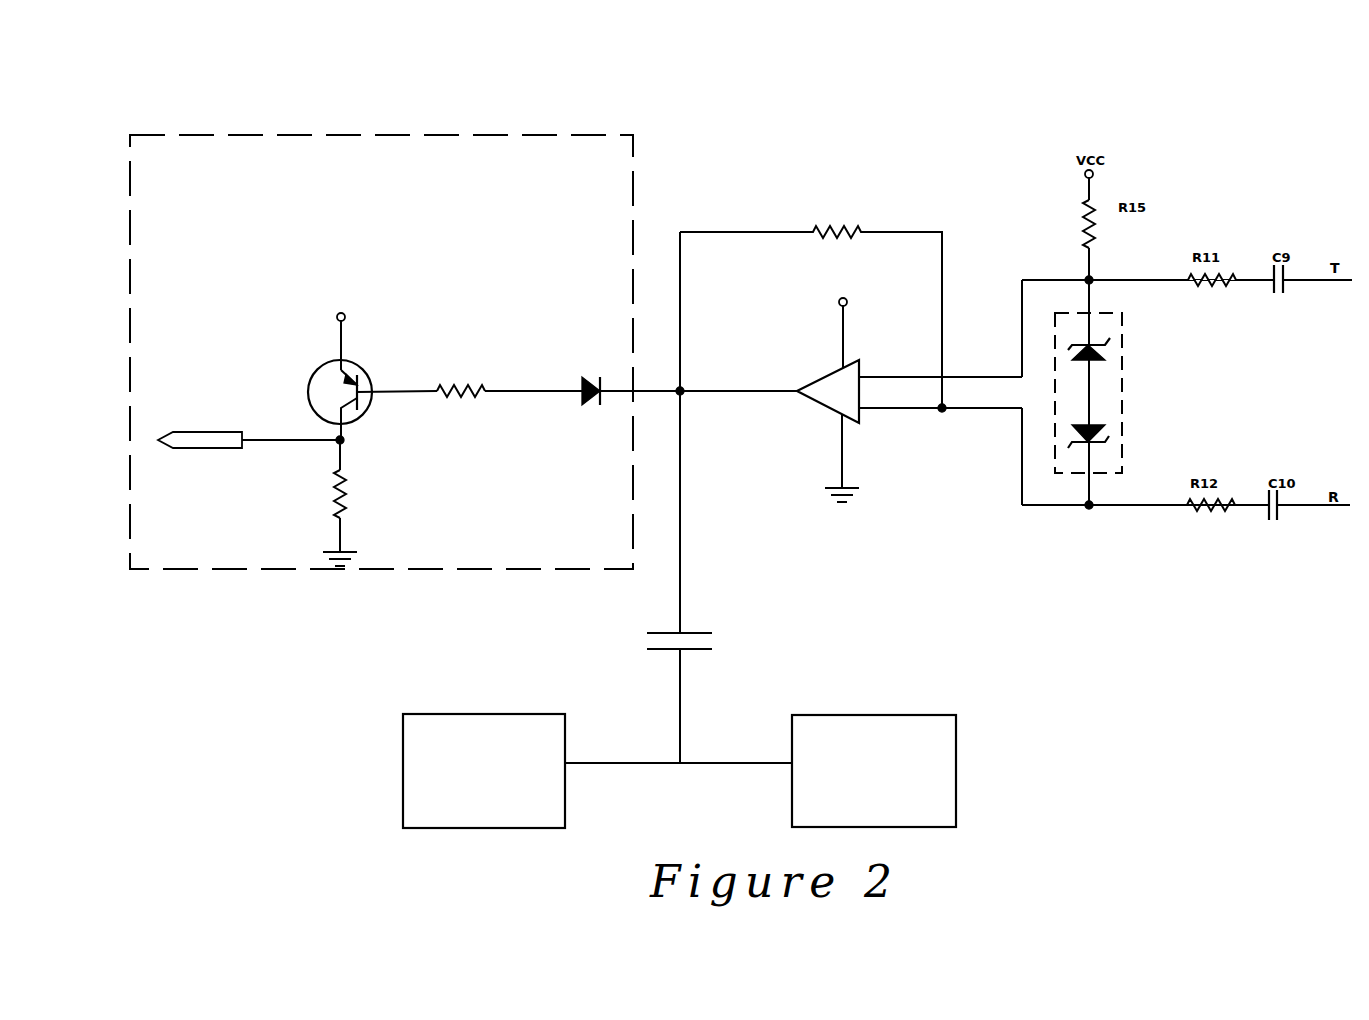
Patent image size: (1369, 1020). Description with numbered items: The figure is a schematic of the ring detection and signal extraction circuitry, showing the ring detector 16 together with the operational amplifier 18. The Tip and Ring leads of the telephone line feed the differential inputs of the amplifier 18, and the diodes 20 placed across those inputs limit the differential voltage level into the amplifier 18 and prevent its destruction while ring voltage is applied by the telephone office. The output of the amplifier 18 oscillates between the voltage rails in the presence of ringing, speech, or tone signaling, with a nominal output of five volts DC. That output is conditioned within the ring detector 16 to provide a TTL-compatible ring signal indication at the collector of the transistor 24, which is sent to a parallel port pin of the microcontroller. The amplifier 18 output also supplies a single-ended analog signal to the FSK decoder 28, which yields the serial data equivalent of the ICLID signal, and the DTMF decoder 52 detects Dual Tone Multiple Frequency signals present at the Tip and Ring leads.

The ring detector 16 is at (380, 136).
The operational amplifier 18 is at (820, 385).
The diodes 20 is at (1112, 463).
The transistor 24 is at (313, 362).
The FSK decoder 28 is at (422, 742).
The DTMF decoder 52 is at (945, 748).